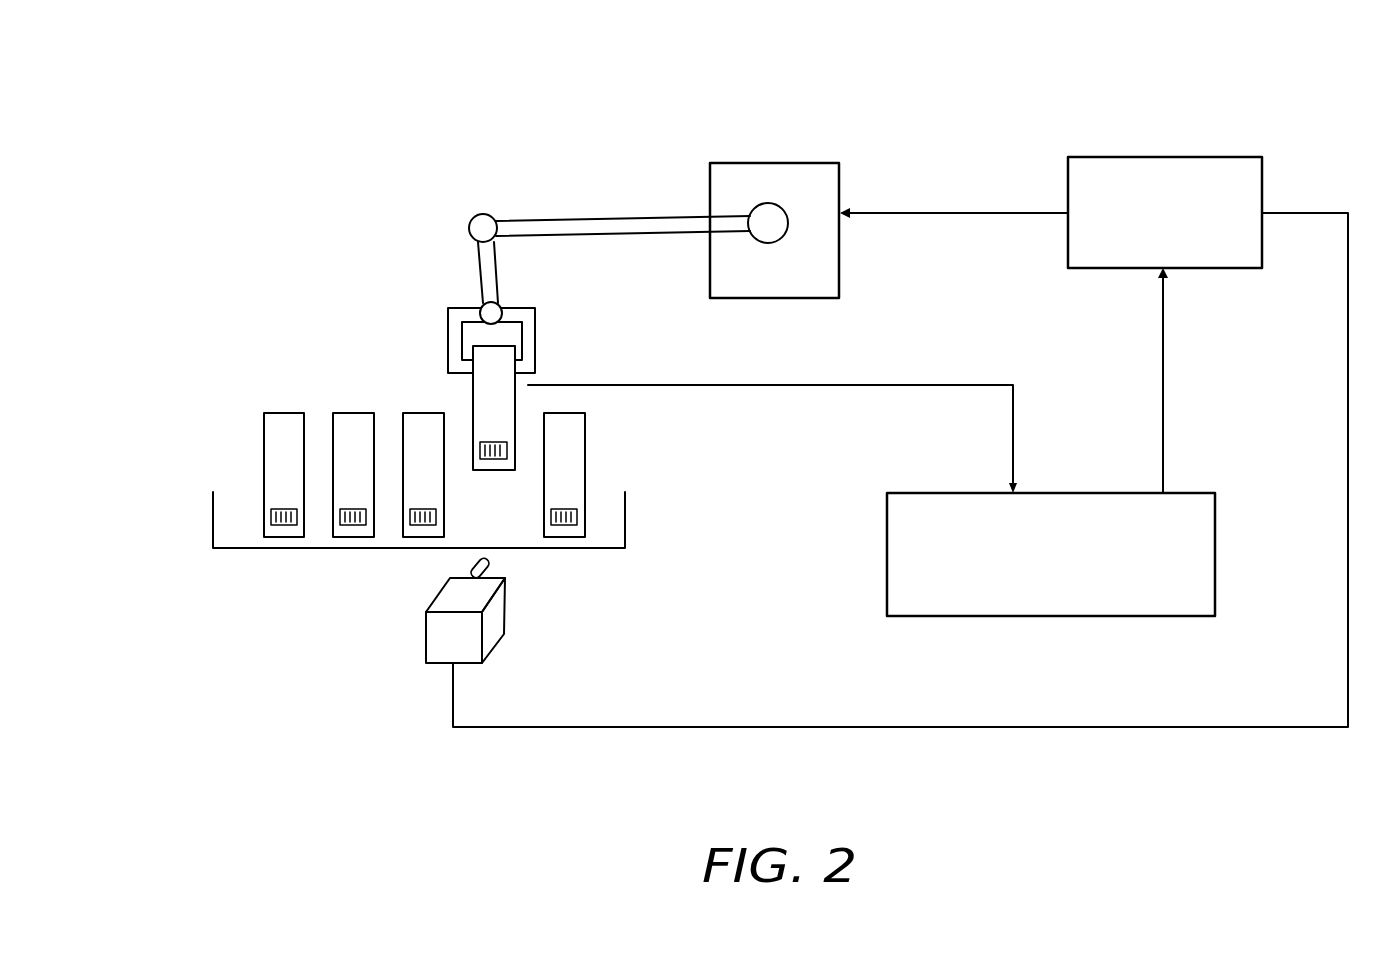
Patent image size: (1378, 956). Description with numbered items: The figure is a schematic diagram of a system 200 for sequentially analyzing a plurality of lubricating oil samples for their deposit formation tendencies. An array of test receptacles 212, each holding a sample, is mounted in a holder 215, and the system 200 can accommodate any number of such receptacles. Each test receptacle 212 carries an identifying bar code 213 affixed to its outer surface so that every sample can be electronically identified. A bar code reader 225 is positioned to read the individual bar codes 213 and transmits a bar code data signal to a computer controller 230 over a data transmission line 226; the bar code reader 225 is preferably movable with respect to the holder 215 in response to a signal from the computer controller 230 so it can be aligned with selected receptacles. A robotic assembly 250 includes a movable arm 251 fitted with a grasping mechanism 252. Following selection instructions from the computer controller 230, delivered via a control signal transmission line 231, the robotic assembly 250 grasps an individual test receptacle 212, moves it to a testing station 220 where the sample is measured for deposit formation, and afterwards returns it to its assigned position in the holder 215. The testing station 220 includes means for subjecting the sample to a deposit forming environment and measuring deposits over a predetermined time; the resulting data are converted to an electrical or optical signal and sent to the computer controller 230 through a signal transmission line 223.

The system 200 is at (504, 112).
The test receptacles 212 is at (284, 396).
The identifying bar code 213 is at (285, 527).
The holder 215 is at (211, 525).
The testing station 220 is at (1077, 571).
The signal transmission line 223 is at (1160, 346).
The bar code reader 225 is at (498, 647).
The data transmission line 226 is at (995, 727).
The computer controller 230 is at (1192, 230).
The control signal transmission line 231 is at (955, 213).
The robotic assembly 250 is at (790, 163).
The movable arm 251 is at (620, 218).
The grasping mechanism 252 is at (462, 307).